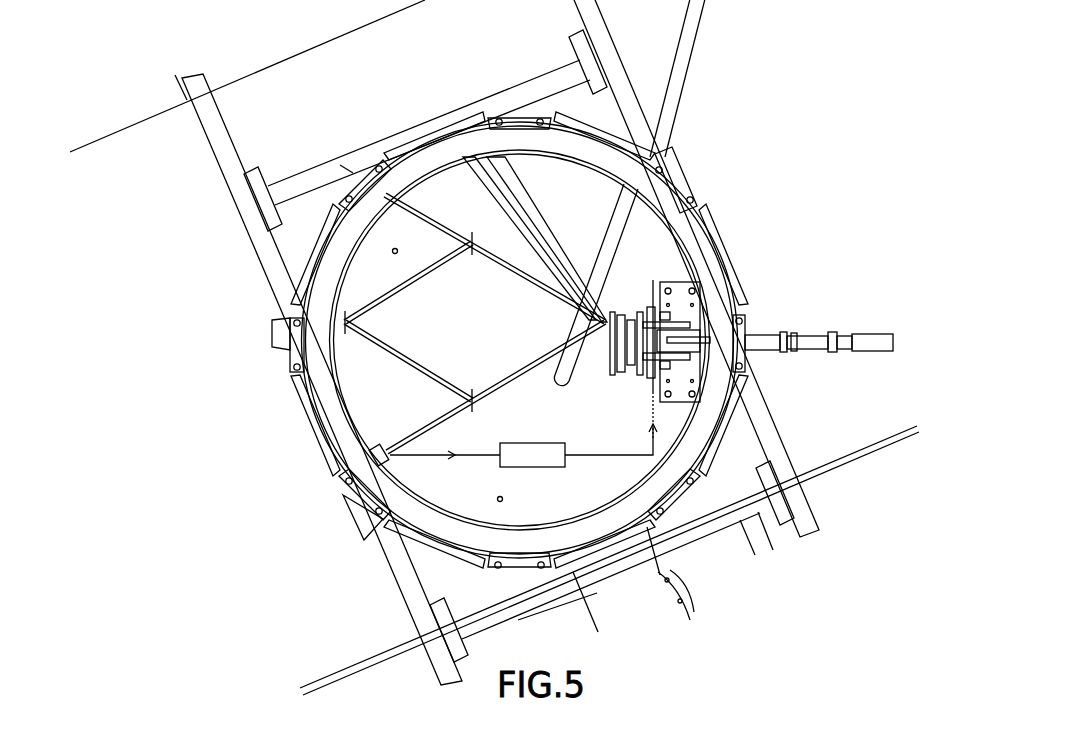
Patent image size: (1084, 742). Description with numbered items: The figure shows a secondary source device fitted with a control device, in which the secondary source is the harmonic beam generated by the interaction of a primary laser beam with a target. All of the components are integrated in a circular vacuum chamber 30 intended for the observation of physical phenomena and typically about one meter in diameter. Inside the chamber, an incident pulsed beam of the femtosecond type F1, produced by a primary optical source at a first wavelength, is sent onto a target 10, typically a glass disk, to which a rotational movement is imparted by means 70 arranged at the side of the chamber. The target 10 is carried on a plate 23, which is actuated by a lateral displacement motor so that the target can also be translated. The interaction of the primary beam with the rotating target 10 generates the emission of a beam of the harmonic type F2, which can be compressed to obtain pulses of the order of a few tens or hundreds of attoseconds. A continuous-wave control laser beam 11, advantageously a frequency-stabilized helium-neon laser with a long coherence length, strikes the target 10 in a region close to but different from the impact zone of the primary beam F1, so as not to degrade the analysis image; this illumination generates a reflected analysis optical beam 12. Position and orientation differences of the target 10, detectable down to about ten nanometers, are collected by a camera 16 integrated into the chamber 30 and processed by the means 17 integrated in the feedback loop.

The target 10 is at (608, 358).
The continuous-wave control laser beam 11 is at (428, 215).
The reflected analysis optical beam 12 is at (517, 373).
The camera 16 is at (381, 442).
The means integrated in the feedback loop 17 is at (534, 466).
The plate 23 is at (685, 290).
The vacuum chamber 30 is at (697, 237).
The rotation means 70 is at (768, 344).
The incident pulsed beam F1 is at (612, 235).
The harmonic beam F2 is at (492, 178).